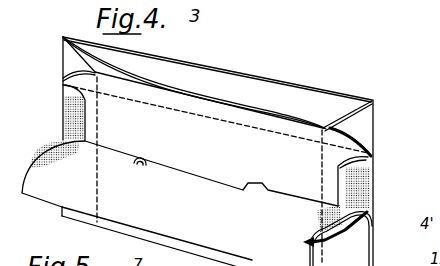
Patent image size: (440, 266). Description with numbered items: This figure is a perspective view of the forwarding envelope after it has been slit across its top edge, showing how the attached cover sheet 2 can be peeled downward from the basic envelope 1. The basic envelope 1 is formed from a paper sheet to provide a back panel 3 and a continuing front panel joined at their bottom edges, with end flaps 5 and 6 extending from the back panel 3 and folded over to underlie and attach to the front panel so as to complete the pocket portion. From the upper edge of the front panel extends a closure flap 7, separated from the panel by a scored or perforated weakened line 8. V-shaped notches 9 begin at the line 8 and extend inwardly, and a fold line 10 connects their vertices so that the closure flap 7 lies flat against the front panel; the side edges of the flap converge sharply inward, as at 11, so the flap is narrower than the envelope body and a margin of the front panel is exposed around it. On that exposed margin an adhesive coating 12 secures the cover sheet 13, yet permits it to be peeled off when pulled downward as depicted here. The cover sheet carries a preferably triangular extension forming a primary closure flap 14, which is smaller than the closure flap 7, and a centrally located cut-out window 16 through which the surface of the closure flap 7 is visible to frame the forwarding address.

The basic envelope 1 is at (364, 203).
The cover sheet 2 is at (338, 236).
The back panel 3 is at (327, 117).
The end flap 5 is at (374, 128).
The end flap 6 is at (72, 68).
The closure flap 7 is at (370, 186).
The weakened line 8 is at (255, 126).
The V-shaped notches 9 is at (63, 80).
The fold line 10 is at (167, 90).
The converging side edges 11 is at (63, 103).
The adhesive coating 12 is at (421, 178).
The cover sheet 13 is at (43, 190).
The primary closure flap 14 is at (267, 88).
The cut-out window 16 is at (202, 185).